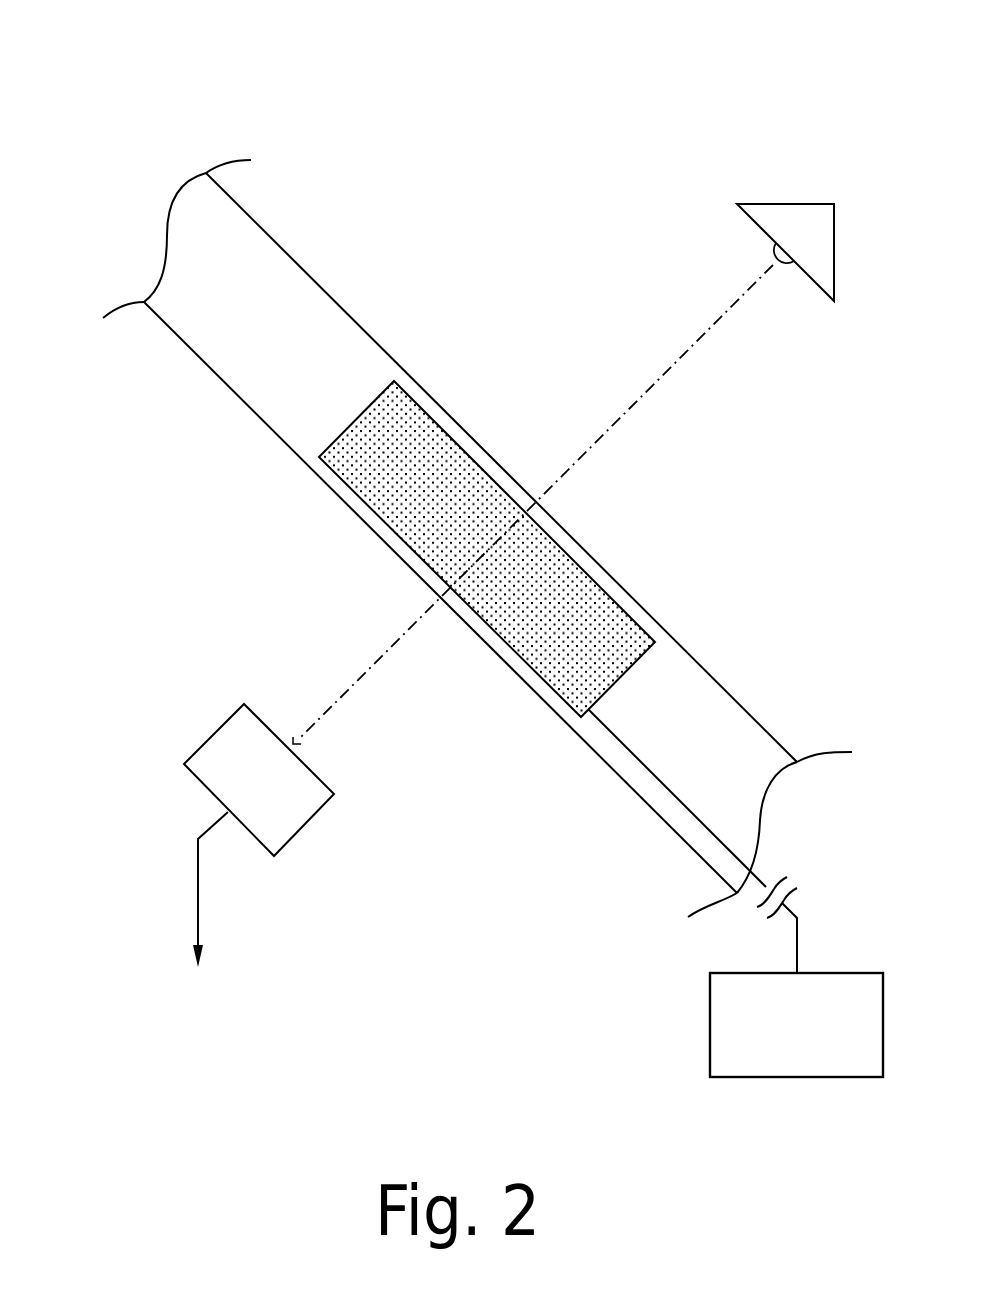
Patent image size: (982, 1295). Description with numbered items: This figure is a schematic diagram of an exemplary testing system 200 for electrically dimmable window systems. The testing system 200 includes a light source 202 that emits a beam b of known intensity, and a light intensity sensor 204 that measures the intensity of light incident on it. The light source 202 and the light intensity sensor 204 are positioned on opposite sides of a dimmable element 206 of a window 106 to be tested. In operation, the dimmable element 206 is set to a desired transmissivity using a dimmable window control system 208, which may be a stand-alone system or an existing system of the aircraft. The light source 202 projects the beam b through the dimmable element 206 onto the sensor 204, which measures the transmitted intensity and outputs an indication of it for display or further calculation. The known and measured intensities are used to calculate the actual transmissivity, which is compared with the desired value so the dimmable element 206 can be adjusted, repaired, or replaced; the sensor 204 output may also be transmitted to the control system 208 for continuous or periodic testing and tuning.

The testing system 200 is at (171, 91).
The window 106 is at (215, 373).
The dimmable element 206 is at (337, 437).
The light source 202 is at (767, 203).
The beam b is at (657, 377).
The light intensity sensor 204 is at (222, 729).
The dimmable window control system 208 is at (710, 1022).